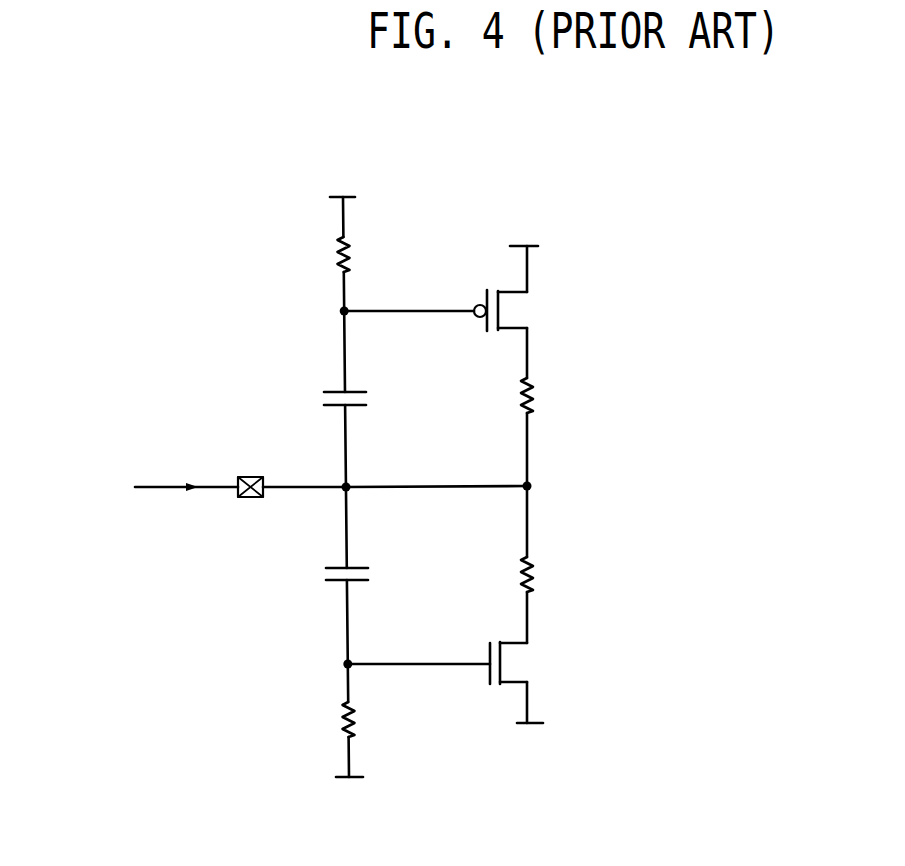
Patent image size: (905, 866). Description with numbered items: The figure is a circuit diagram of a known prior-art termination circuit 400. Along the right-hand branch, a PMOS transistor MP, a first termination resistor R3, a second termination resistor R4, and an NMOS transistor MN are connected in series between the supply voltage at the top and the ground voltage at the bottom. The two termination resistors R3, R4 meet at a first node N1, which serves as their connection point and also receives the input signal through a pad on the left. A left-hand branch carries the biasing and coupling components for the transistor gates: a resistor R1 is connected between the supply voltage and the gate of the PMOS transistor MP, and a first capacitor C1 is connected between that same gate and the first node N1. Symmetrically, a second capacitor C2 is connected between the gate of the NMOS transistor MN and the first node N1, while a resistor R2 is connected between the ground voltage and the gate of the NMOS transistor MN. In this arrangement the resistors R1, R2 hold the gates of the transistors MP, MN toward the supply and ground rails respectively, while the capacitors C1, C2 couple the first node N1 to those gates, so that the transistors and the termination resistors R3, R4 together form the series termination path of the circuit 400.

The termination circuit 400 is at (622, 163).
The resistor R1 is at (363, 254).
The resistor R2 is at (370, 720).
The termination resistor R3 is at (548, 398).
The termination resistor R4 is at (549, 575).
The first capacitor C1 is at (364, 399).
The second capacitor C2 is at (367, 576).
The PMOS transistor MP is at (517, 310).
The NMOS transistor MN is at (527, 663).
The first node N1 is at (437, 472).